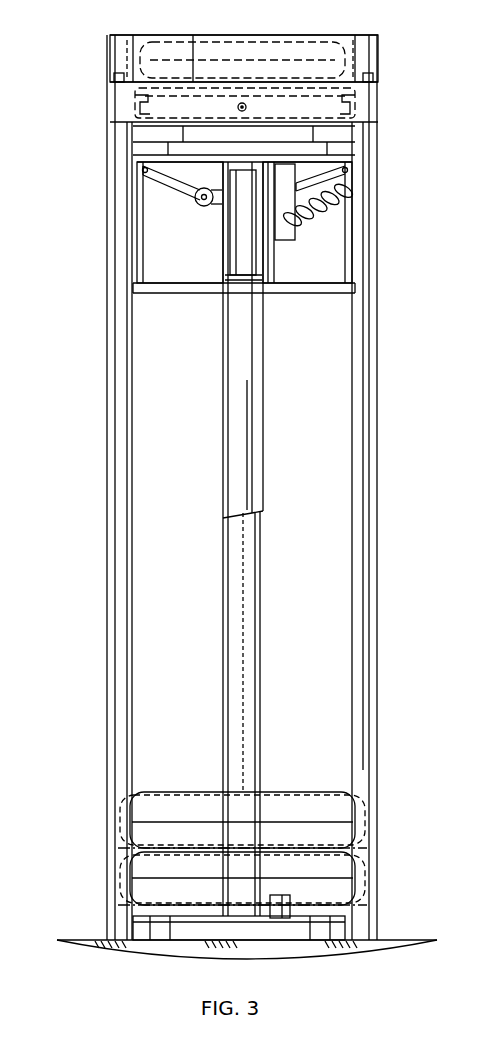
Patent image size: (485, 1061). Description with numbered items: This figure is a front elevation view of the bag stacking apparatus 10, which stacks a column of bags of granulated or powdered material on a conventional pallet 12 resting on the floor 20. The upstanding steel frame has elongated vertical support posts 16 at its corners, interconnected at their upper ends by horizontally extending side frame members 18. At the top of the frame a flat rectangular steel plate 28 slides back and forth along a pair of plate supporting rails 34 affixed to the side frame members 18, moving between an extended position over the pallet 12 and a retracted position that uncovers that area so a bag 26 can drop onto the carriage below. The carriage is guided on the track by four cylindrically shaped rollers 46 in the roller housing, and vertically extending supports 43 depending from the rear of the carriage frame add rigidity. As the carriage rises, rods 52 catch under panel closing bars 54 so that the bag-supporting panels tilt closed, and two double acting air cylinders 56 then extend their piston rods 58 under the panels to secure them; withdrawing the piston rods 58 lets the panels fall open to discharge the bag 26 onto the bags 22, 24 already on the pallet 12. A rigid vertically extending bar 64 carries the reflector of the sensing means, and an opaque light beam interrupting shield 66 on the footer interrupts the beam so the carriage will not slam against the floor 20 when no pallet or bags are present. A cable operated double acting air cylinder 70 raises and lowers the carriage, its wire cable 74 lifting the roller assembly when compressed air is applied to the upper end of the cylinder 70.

The apparatus 10 is at (405, 305).
The pallet 12 is at (157, 918).
The vertical support beams or posts 16 is at (125, 337).
The side frame members 18 is at (118, 102).
The floor 20 is at (385, 938).
The bag of granulated material 22 is at (292, 872).
The bag of granulated material 24 is at (292, 813).
The bag of granulated material 26 is at (170, 52).
The steel plate 28 is at (358, 96).
The plate supporting rails 34 is at (137, 120).
The vertically extending supports 43 is at (138, 268).
The cylindrically shaped rollers 46 is at (245, 273).
The rods 52 is at (163, 190).
The panel closing bars 54 is at (135, 171).
The double acting air cylinders 56 is at (195, 198).
The piston rods 58 is at (208, 199).
The vertically extending bar 64 is at (286, 241).
The light beam interrupting shield 66 is at (295, 906).
The cable operated double acting air cylinder 70 is at (264, 440).
The wire cable 74 is at (245, 702).